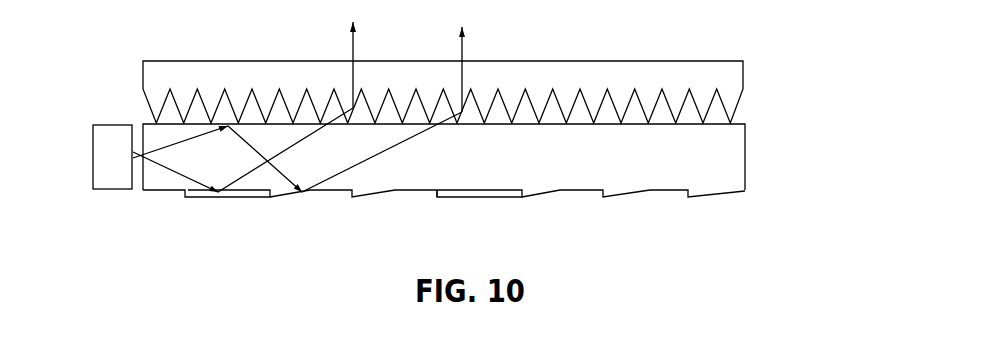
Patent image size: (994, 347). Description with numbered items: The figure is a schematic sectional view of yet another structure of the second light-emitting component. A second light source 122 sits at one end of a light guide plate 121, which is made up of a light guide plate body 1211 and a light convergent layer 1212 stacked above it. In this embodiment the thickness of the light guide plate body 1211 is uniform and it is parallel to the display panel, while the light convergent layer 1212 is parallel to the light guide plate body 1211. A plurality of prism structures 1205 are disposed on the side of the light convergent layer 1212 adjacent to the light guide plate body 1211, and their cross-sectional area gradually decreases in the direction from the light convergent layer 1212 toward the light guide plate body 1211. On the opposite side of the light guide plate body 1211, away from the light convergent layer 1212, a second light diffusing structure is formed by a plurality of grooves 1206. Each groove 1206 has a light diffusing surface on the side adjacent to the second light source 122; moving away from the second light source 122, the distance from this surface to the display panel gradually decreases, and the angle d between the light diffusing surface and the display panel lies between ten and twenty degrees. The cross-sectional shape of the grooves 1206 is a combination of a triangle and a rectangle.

The light guide plate 121 is at (847, 97).
The light convergent layer 1212 is at (752, 100).
The prism structures 1205 is at (622, 100).
The light guide plate body 1211 is at (738, 143).
The grooves 1206 is at (575, 198).
The second light source 122 is at (107, 143).
The angle d is at (463, 203).